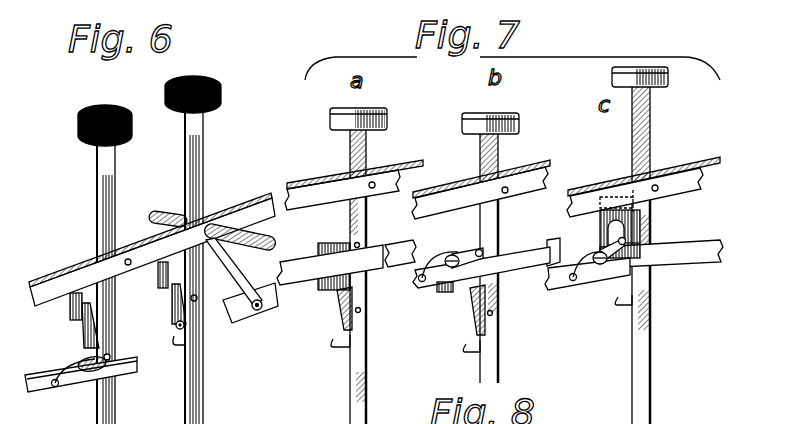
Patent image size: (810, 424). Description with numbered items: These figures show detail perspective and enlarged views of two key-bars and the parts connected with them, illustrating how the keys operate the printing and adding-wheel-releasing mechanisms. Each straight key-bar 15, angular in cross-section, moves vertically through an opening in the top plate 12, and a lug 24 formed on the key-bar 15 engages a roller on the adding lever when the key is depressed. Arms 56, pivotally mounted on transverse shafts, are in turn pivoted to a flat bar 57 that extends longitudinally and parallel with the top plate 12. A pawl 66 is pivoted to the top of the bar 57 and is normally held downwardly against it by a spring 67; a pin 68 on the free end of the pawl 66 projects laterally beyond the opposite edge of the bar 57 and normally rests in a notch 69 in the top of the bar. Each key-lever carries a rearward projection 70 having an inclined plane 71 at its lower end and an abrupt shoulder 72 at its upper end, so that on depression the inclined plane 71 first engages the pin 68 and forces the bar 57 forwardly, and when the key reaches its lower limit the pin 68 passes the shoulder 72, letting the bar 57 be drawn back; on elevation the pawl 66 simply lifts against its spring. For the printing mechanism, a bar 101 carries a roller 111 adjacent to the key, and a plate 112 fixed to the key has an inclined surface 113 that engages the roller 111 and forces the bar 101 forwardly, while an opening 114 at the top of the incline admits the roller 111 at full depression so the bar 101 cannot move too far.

In FIG. 7, the top plate 12 is at (404, 160).
In FIG. 6, the key-bar 15 is at (185, 153).
In FIG. 7, the key-bar 15 is at (367, 372).
In FIG. 6, the lug 24 is at (186, 344).
In FIG. 7, the lug 24 is at (341, 338).
In FIG. 6, the arm 56 is at (240, 280).
In FIG. 6, the flat bar 57 is at (65, 392).
In FIG. 7, the flat bar 57 is at (554, 241).
In FIG. 6, the pawl 66 is at (100, 370).
In FIG. 7, the pawl 66 is at (524, 265).
In FIG. 7, the spring 67 is at (450, 252).
In FIG. 7, the pin 68 is at (483, 249).
In FIG. 7, the notch 69 is at (626, 256).
In FIG. 7, the rearward projection 70 is at (640, 222).
In FIG. 7, the inclined plane 71 is at (641, 243).
In FIG. 7, the shoulder 72 is at (604, 203).
In FIG. 6, the bar 101 is at (222, 315).
In FIG. 7, the bar 101 is at (308, 288).
In FIG. 6, the roller 111 is at (174, 322).
In FIG. 7, the roller 111 is at (320, 266).
In FIG. 6, the plate 112 is at (71, 268).
In FIG. 7, the plate 112 is at (338, 241).
In FIG. 6, the inclined surface 113 is at (87, 333).
In FIG. 7, the inclined surface 113 is at (342, 311).
In FIG. 6, the opening 114 is at (72, 310).